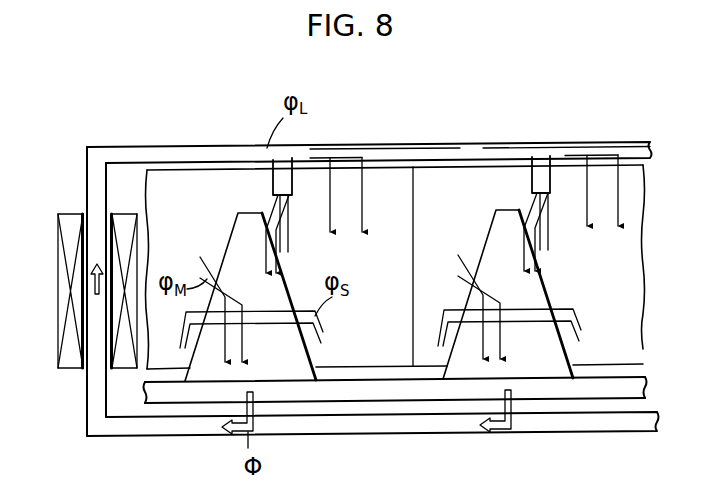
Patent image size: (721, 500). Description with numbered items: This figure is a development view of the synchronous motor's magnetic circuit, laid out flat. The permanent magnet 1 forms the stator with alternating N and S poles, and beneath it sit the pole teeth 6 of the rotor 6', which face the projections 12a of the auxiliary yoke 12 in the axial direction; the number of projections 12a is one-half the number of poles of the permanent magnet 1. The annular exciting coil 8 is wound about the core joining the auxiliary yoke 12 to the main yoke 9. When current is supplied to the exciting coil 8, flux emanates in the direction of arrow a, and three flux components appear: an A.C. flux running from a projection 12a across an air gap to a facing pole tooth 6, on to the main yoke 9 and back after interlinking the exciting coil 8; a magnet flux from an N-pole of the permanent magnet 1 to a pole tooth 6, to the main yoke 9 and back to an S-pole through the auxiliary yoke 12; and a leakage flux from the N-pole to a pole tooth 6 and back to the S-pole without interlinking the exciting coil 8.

The permanent magnet 1 is at (383, 192).
The auxiliary yoke 12 is at (630, 146).
The projection 12a is at (282, 187).
The pole tooth 6 is at (401, 329).
The rotor 6' is at (395, 429).
The annular exciting coil 8 is at (62, 323).
The main yoke 9 is at (565, 425).
The direction of magnetic flux a is at (95, 283).